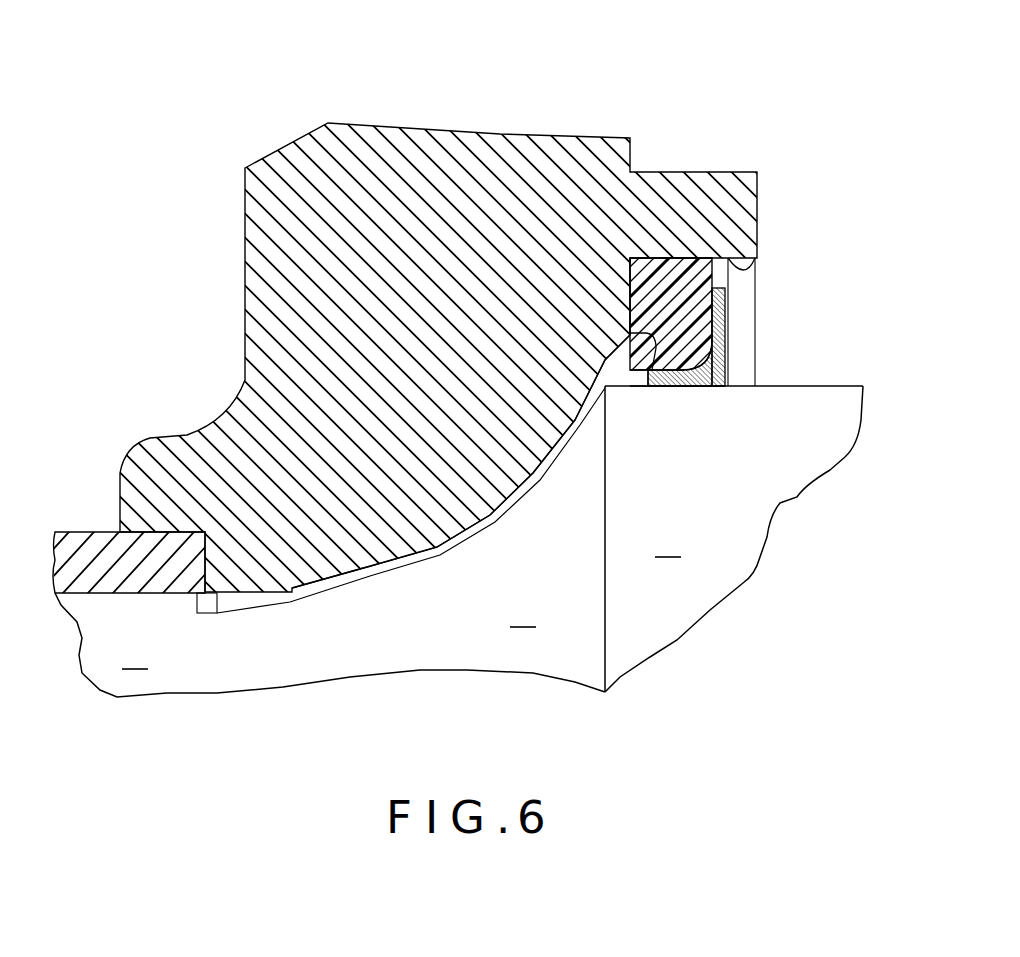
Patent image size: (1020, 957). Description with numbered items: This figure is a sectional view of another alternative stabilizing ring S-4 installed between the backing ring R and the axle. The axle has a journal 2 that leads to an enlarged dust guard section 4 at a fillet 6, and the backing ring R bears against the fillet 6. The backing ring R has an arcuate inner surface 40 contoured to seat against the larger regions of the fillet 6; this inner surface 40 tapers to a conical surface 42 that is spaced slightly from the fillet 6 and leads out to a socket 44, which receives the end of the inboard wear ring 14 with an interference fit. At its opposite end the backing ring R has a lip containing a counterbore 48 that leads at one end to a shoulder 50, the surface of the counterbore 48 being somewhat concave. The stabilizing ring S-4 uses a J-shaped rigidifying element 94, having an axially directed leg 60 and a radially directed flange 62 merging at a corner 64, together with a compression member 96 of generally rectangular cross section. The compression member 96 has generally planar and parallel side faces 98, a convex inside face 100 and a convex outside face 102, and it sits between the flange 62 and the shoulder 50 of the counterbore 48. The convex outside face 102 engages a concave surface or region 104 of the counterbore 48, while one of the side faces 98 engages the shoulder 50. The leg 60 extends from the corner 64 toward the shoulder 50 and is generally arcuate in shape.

The backing ring R is at (298, 111).
The journal 2 is at (330, 645).
The dust guard section 4 is at (734, 539).
The fillet 6 is at (411, 539).
The wear ring 14 is at (85, 530).
The arcuate inner surface 40 is at (537, 473).
The conical surface 42 is at (368, 566).
The socket 44 is at (172, 534).
The counterbore 48 is at (740, 274).
The shoulder 50 is at (650, 382).
The axially directed leg 60 is at (636, 366).
The radially directed flange 62 is at (722, 300).
The corner 64 is at (708, 387).
The J-shaped rigidifying element 94 is at (720, 386).
The compression member 96 is at (688, 262).
The side faces 98 is at (631, 300).
The convex inside face 100 is at (673, 384).
The convex outside face 102 is at (648, 258).
The concave surface or region 104 is at (681, 285).
The stabilizing ring S-4 is at (750, 317).